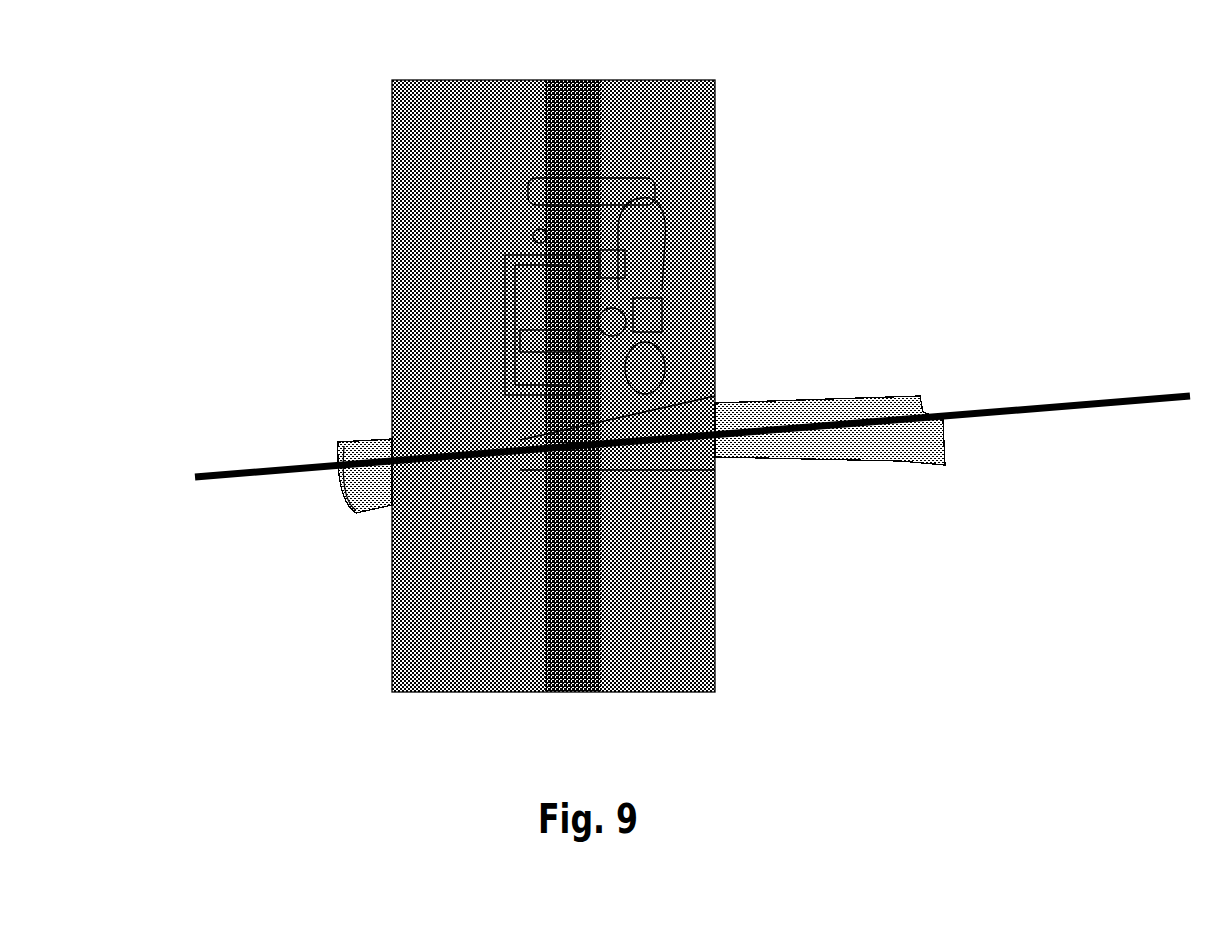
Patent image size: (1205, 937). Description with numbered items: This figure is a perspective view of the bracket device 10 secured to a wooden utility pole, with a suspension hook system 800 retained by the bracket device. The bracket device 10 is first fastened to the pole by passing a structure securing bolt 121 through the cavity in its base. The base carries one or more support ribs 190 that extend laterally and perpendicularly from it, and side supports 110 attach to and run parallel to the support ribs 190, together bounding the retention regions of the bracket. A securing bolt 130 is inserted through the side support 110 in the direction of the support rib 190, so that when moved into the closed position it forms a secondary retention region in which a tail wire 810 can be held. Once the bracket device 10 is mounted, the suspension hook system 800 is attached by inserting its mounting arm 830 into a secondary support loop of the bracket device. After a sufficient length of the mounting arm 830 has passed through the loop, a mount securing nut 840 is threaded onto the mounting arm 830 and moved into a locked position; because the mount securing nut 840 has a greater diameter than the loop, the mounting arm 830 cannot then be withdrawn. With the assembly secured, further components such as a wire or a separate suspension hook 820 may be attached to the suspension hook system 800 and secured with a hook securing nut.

The bracket device 10 is at (617, 153).
The suspension hook system 800 is at (375, 533).
The securing bolt 130 is at (547, 243).
The side support 110 is at (503, 279).
The support rib 190 is at (540, 340).
The mounting arm 830 is at (648, 213).
The mount securing nut 840 is at (620, 263).
The suspension hook 820 is at (655, 313).
The structure securing bolt 121 is at (612, 325).
The tail wire 810 is at (645, 362).